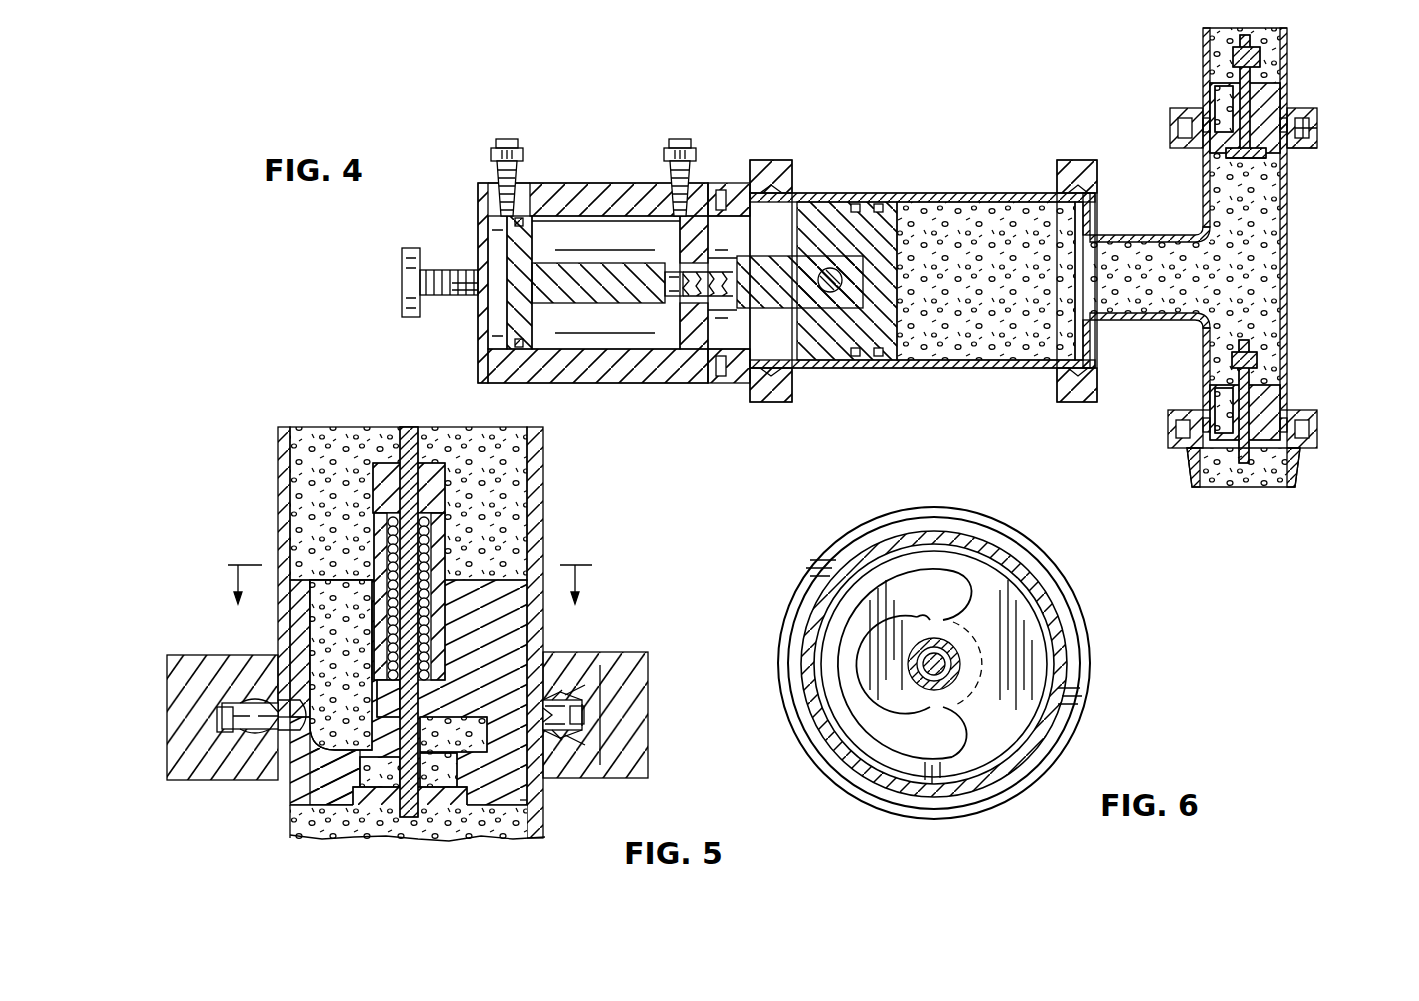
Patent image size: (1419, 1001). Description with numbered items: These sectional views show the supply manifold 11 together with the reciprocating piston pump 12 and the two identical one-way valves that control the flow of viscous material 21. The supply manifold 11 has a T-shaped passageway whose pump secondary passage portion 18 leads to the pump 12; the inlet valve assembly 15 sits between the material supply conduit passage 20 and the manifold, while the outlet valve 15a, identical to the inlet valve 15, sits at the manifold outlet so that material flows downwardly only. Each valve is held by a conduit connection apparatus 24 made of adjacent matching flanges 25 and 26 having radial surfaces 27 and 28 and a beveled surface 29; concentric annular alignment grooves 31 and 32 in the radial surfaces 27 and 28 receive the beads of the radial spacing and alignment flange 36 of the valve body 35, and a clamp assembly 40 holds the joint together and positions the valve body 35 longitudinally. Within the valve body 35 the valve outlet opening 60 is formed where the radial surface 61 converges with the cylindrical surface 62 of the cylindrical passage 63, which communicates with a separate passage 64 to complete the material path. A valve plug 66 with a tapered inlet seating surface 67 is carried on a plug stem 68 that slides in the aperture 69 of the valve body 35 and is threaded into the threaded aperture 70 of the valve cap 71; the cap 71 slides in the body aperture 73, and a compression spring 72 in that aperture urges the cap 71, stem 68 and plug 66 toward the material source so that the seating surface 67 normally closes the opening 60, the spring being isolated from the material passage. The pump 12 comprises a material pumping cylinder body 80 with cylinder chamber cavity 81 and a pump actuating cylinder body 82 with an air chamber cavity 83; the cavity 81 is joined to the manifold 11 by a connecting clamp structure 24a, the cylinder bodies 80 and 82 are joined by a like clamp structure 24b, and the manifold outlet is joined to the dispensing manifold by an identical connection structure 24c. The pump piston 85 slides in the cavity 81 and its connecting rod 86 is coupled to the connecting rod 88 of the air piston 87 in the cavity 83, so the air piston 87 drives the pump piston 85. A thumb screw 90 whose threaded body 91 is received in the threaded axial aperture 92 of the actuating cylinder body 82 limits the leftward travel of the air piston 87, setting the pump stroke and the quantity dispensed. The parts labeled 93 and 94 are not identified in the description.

In FIG. 4, the supply manifold assembly 11 is at (1289, 236).
In FIG. 4, the reciprocating piston pump assembly 12 is at (905, 193).
In FIG. 4, the inlet valve assembly 15 is at (1247, 117).
In FIG. 4, the outlet valve 15a is at (1252, 390).
In FIG. 4, the pump secondary passage portion 18 is at (1120, 235).
In FIG. 6, the material supply conduit passage 20 is at (872, 542).
In FIG. 4, the viscous flowable material 21 is at (1245, 270).
In FIG. 5, the viscous flowable material 21 is at (510, 485).
In FIG. 4, the conduit connection apparatus 24 is at (1315, 150).
In FIG. 5, the conduit connection apparatus 24 is at (651, 708).
In FIG. 4, the conduit connecting clamp structure 24a is at (1066, 158).
In FIG. 4, the conduit connecting clamp structure 24b is at (770, 158).
In FIG. 4, the conduit connection structural apparatus 24c is at (1302, 452).
In FIG. 4, the flange 25 is at (1302, 114).
In FIG. 5, the flange 25 is at (572, 706).
In FIG. 4, the flange 26 is at (1285, 150).
In FIG. 5, the flange 26 is at (582, 735).
In FIG. 5, the radial surface 27 is at (596, 712).
In FIG. 5, the radial surface 28 is at (576, 740).
In FIG. 5, the beveled surface 29 is at (582, 714).
In FIG. 5, the annular alignment groove 31 is at (560, 712).
In FIG. 5, the annular alignment groove 32 is at (562, 738).
In FIG. 4, the valve body 35 is at (1266, 92).
In FIG. 5, the valve body 35 is at (500, 592).
In FIG. 5, the radial spacing and alignment flange 36 is at (215, 712).
In FIG. 4, the clamp assembly 40 is at (1319, 126).
In FIG. 5, the clamp assembly 40 is at (651, 740).
In FIG. 4, the valve outlet opening 60 is at (1226, 152).
In FIG. 5, the valve outlet opening 60 is at (298, 790).
In FIG. 5, the radial surface 61 is at (270, 775).
In FIG. 6, the radial surface 61 is at (975, 724).
In FIG. 5, the cylindrical surface 62 is at (520, 800).
In FIG. 5, the cylindrical passage 63 is at (452, 765).
In FIG. 6, the cylindrical passage 63 is at (940, 635).
In FIG. 4, the separate passage 64 is at (1222, 95).
In FIG. 5, the separate passage 64 is at (322, 602).
In FIG. 6, the separate passage 64 is at (928, 548).
In FIG. 4, the valve plug 66 is at (1250, 160).
In FIG. 5, the valve plug 66 is at (410, 800).
In FIG. 5, the tapered inlet seating surface 67 is at (284, 835).
In FIG. 4, the plug stem 68 is at (1233, 50).
In FIG. 5, the plug stem 68 is at (432, 560).
In FIG. 6, the plug stem 68 is at (978, 628).
In FIG. 5, the aperture 69 is at (252, 657).
In FIG. 5, the threaded aperture 70 is at (410, 462).
In FIG. 4, the valve cap 71 is at (1253, 56).
In FIG. 5, the valve cap 71 is at (398, 470).
In FIG. 6, the valve cap 71 is at (962, 662).
In FIG. 5, the compression spring 72 is at (395, 690).
In FIG. 5, the aperture 73 is at (388, 600).
In FIG. 4, the material pumping cylinder body 80 is at (955, 195).
In FIG. 4, the cylinder chamber cavity 81 is at (1000, 205).
In FIG. 4, the pump actuating cylinder body 82 is at (548, 183).
In FIG. 4, the air cylindrical chamber cavity 83 is at (692, 225).
In FIG. 4, the pump piston 85 is at (840, 202).
In FIG. 4, the connecting rod 86 is at (805, 256).
In FIG. 4, the piston 87 is at (515, 245).
In FIG. 4, the connecting rod 88 is at (588, 266).
In FIG. 4, the thumb screw 90 is at (402, 266).
In FIG. 4, the threaded body 91 is at (444, 270).
In FIG. 4, the threaded axial aperture 92 is at (462, 296).
In FIG. 4, the screw 93 is at (680, 140).
In FIG. 4, the screw 94 is at (506, 140).